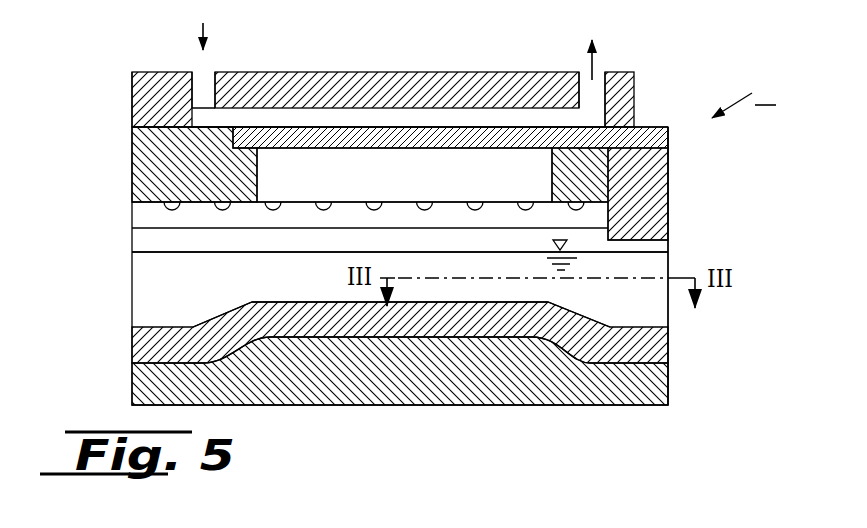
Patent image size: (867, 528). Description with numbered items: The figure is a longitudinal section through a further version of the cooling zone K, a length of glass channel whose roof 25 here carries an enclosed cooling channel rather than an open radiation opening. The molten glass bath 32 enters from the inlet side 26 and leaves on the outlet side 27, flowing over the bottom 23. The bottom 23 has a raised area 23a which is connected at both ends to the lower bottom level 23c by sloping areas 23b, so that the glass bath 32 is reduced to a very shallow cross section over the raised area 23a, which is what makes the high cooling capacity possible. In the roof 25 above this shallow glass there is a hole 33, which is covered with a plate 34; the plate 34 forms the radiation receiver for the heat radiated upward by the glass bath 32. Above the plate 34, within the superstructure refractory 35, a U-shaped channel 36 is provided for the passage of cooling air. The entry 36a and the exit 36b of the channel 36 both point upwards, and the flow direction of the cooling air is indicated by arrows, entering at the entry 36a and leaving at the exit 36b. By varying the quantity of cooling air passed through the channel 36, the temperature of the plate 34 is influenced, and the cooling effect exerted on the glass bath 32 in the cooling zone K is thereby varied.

The bottom 23 is at (657, 383).
The raised area 23a is at (298, 299).
The sloping areas 23b is at (222, 310).
The lower bottom level 23c is at (173, 325).
The roof 25 is at (150, 167).
The inlet side 26 is at (130, 292).
The outlet side 27 is at (672, 257).
The glass bath 32 is at (146, 270).
The hole 33 is at (420, 184).
The plate 34 is at (470, 137).
The superstructure refractory 35 is at (147, 100).
The U-shaped channel 36 is at (338, 113).
The entry 36a is at (203, 97).
The exit 36b is at (612, 105).
The cooling zone K is at (744, 92).